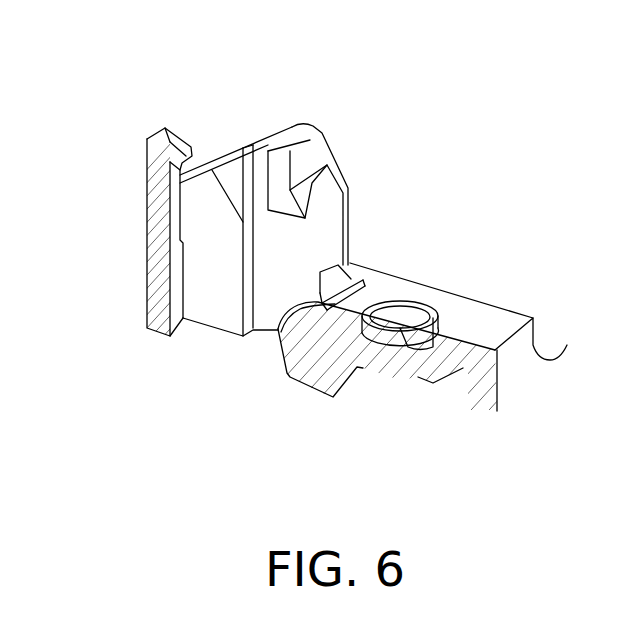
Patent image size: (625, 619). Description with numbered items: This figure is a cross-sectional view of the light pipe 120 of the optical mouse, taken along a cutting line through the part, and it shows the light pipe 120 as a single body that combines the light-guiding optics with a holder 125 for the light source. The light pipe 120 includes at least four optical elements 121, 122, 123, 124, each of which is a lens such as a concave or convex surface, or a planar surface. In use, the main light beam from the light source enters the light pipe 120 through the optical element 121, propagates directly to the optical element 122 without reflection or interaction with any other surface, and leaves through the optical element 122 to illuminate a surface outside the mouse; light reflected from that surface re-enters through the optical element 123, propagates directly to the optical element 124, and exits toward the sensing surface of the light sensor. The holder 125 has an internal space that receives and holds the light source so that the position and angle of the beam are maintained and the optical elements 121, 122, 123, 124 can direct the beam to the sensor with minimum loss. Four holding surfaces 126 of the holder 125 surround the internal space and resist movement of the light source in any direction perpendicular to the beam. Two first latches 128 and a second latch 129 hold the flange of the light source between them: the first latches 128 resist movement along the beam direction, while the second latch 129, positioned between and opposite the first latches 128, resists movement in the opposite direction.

The light pipe 120 is at (493, 67).
The optical element 121 is at (332, 275).
The optical element 122 is at (352, 380).
The optical element 123 is at (397, 380).
The optical element 124 is at (412, 312).
The holder 125 is at (207, 265).
The holding surfaces 126 is at (236, 181).
The first latches 128 is at (300, 123).
The second latch 129 is at (167, 129).